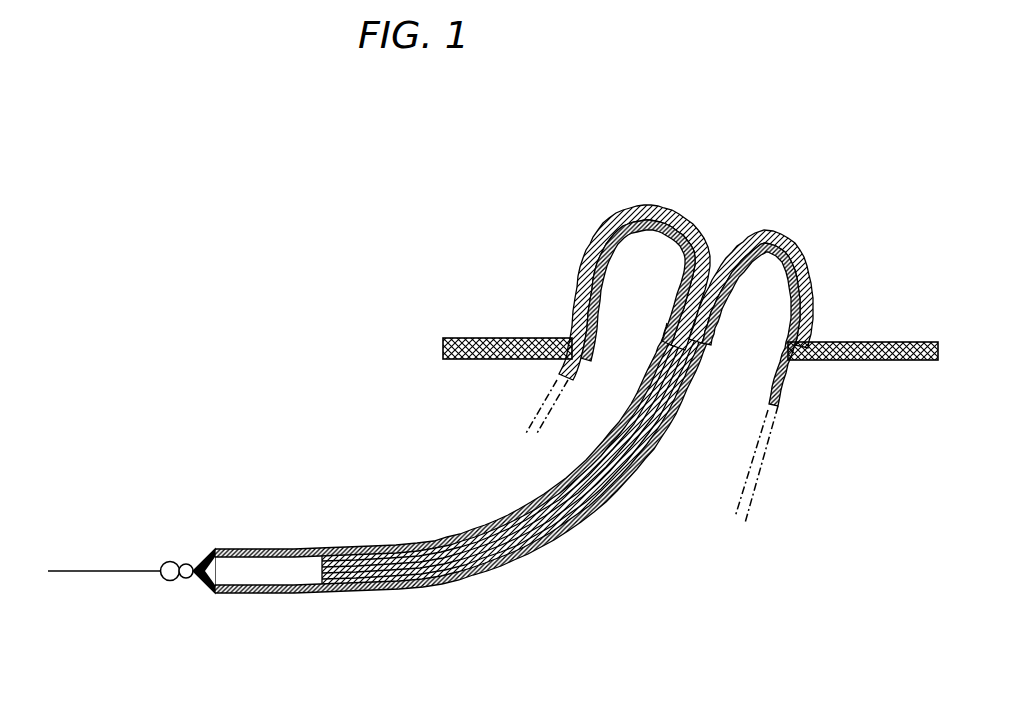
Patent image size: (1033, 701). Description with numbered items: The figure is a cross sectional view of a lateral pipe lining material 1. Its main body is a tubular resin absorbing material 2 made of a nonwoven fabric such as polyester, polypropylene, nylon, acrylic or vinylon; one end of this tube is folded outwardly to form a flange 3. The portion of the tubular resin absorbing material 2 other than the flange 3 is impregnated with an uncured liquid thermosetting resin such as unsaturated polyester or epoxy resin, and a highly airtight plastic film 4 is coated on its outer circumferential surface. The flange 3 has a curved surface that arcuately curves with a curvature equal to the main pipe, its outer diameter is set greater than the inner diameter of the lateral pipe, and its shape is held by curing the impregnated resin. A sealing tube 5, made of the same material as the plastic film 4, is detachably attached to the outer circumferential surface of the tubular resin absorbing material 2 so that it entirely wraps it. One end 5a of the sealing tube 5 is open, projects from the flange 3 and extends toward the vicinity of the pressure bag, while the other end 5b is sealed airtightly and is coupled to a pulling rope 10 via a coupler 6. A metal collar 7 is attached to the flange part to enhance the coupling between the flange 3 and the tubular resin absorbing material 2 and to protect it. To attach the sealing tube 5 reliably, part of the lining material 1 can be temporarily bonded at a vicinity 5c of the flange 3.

The lateral pipe lining material 1 is at (307, 450).
The tubular resin absorbing material 2 is at (437, 553).
The flange 3 is at (492, 339).
The plastic film 4 is at (637, 402).
The sealing tube 5 is at (283, 553).
The one end of the sealing tube 5a is at (528, 428).
The other end of the sealing tube 5b is at (198, 556).
The vicinity of the flange 5c is at (603, 294).
The coupler 6 is at (178, 582).
The metal collar 7 is at (835, 303).
The pulling rope 10 is at (112, 569).